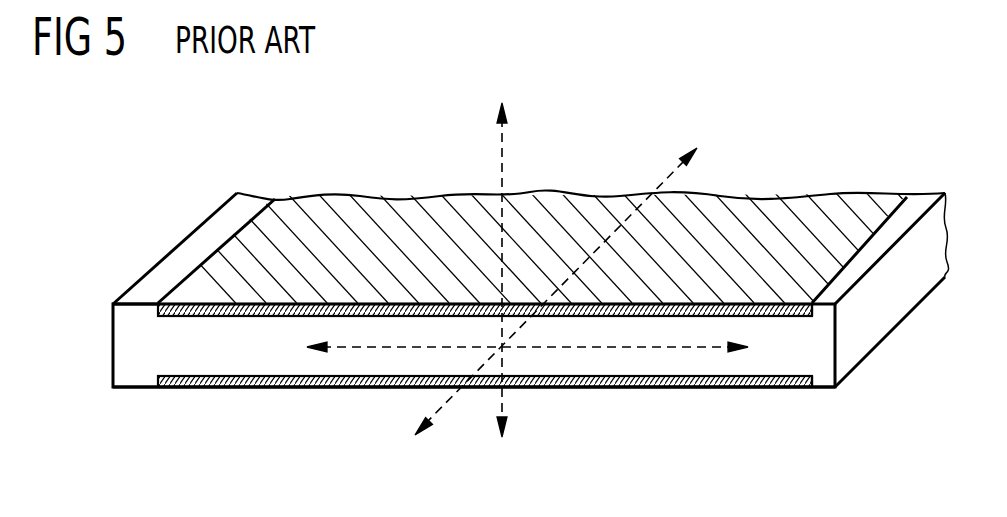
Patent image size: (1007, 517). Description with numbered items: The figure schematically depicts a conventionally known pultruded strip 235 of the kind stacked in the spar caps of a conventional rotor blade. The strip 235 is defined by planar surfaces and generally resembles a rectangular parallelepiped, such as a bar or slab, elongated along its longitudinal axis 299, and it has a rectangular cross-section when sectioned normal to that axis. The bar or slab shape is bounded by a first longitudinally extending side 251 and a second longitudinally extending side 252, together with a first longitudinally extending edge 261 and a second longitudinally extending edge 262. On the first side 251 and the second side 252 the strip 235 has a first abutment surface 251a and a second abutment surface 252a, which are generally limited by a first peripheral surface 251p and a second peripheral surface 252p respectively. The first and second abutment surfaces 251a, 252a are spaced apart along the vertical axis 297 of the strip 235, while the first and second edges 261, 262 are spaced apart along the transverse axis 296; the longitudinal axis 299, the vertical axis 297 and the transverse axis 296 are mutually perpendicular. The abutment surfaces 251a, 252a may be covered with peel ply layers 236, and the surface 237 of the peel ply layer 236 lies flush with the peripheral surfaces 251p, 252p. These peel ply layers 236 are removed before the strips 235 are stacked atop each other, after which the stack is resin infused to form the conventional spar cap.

The pultruded strip 235 is at (183, 170).
The first longitudinally extending side 251 is at (866, 160).
The first peripheral surface 251p is at (173, 260).
The first abutment surface 251a is at (313, 317).
The surface of the peel ply layer 237 is at (747, 210).
The first longitudinally extending edge 261 is at (113, 341).
The second longitudinally extending edge 262 is at (903, 298).
The second longitudinally extending side 252 is at (824, 413).
The second peripheral surface 252p is at (138, 388).
The second abutment surface 252a is at (227, 377).
The peel ply layer 236 is at (750, 315).
The vertical axis 297 is at (498, 160).
The transverse axis 296 is at (582, 350).
The longitudinal axis 299 is at (442, 407).